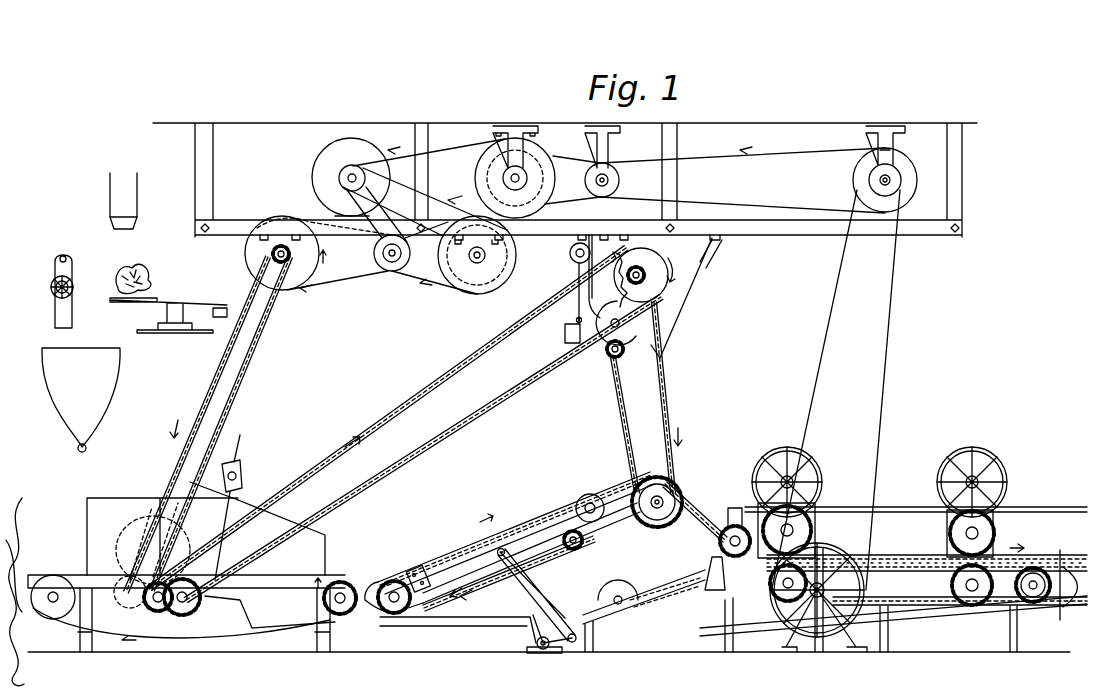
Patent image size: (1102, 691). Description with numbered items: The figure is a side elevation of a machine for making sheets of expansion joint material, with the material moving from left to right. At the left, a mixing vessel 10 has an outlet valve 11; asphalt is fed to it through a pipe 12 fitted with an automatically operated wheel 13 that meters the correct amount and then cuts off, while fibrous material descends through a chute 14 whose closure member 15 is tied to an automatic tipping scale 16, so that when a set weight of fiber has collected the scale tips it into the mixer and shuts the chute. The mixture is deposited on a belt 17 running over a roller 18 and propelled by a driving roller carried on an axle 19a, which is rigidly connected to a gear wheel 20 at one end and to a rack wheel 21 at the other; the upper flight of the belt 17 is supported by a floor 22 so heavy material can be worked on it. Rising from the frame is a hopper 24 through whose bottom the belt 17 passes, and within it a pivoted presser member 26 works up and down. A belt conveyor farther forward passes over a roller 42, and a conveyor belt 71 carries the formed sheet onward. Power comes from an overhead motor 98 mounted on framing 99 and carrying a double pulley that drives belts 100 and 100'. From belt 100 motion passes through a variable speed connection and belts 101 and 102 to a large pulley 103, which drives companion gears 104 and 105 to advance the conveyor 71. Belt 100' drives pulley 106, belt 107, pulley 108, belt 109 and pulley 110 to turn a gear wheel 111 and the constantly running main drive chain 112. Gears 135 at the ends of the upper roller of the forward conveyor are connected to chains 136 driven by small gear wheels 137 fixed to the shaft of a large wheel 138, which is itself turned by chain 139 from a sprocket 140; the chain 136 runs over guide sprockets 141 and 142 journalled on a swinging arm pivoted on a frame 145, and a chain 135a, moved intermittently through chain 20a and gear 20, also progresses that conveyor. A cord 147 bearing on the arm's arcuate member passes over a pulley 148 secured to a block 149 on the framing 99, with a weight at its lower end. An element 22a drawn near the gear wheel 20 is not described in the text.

The mixing vessel 10 is at (65, 404).
The outlet valve 11 is at (78, 451).
The pipe 12 is at (54, 275).
The automatically operated wheel 13 is at (51, 290).
The chute 14 is at (124, 195).
The closure member 15 is at (137, 222).
The automatic tipping scale 16 is at (162, 300).
The belt 17 is at (52, 574).
The roller 18 is at (55, 610).
The axle 19a is at (340, 618).
The gear wheel 20 is at (348, 580).
The chain 20a is at (392, 618).
The rack wheel 21 is at (505, 518).
The floor 22 is at (102, 590).
The bracket 22a is at (386, 578).
The hopper 24 is at (238, 505).
The presser member 26 is at (305, 545).
The roller 42 is at (398, 612).
The conveyor belt 71 is at (645, 590).
The motor 98 is at (341, 150).
The framing 99 is at (206, 132).
The belt 100 is at (619, 153).
The belt 100' is at (425, 202).
The belt 101 is at (783, 152).
The belt 102 is at (893, 353).
The large pulley 103 is at (790, 625).
The companion gear 104 is at (835, 580).
The companion gear 105 is at (893, 598).
The pulley 106 is at (506, 272).
The belt 107 is at (400, 283).
The pulley 108 is at (373, 259).
The belt 109 is at (375, 272).
The pulley 110 is at (290, 290).
The gear wheel 111 is at (265, 262).
The main drive chain 112 is at (240, 393).
The gear 135 is at (650, 518).
The chain 135a is at (532, 548).
The chain 136 is at (668, 404).
The small gear wheel 137 is at (636, 264).
The large wheel 138 is at (676, 322).
The chain 139 is at (436, 381).
The sprocket 140 is at (160, 612).
The guide sprocket 141 is at (621, 357).
The guide sprocket 142 is at (595, 340).
The frame 145 is at (716, 252).
The cord 147 is at (566, 312).
The pulley 148 is at (570, 255).
The block 149 is at (583, 243).